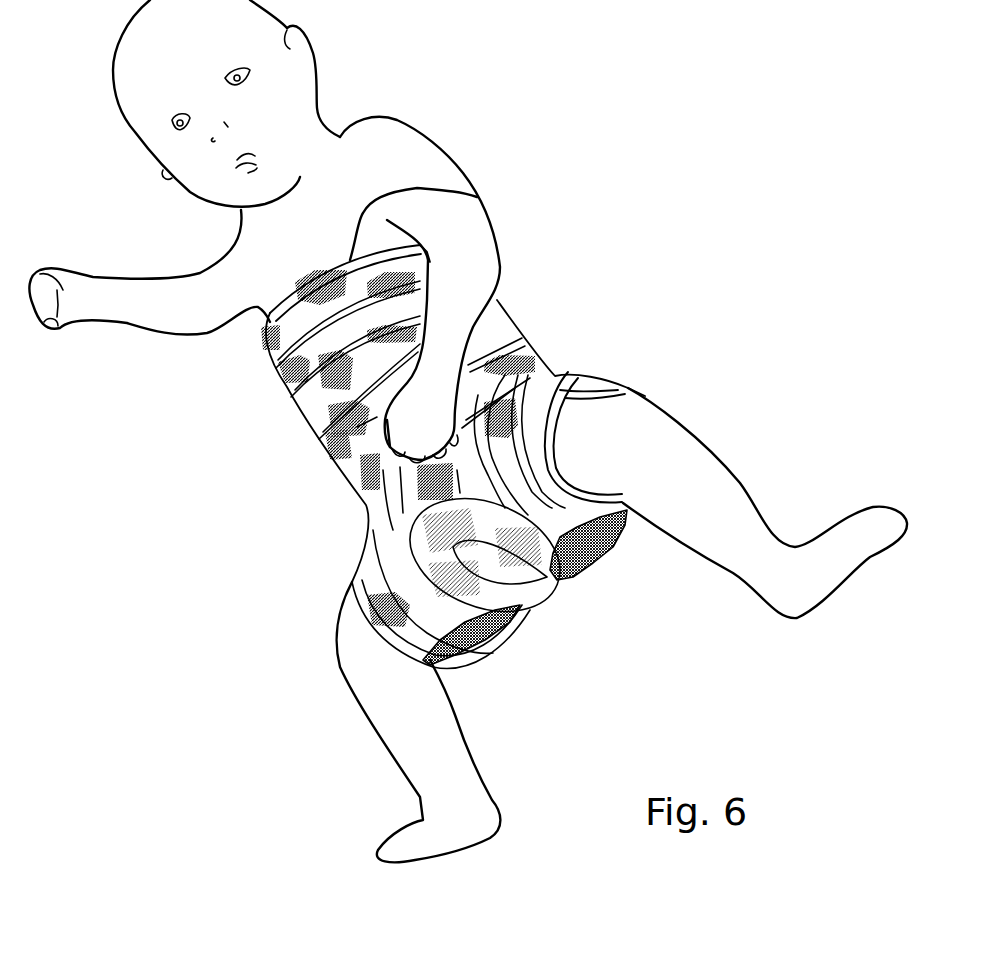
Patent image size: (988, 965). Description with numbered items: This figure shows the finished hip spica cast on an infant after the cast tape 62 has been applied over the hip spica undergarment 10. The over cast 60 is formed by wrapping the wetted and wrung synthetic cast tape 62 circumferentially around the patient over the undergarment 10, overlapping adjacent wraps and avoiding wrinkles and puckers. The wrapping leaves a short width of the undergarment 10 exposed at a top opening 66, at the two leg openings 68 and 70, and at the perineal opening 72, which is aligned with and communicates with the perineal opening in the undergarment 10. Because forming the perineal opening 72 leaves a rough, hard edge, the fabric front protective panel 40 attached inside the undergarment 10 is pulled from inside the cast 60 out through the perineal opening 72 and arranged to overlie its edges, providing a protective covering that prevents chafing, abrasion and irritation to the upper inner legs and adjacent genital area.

The hip spica undergarment 10 is at (605, 397).
The front protective panel 40 is at (547, 580).
The over cast 60 is at (555, 285).
The cast tape 62 is at (315, 385).
The top opening 66 is at (448, 193).
The leg opening 68 is at (360, 623).
The leg opening 70 is at (560, 485).
The perineal opening 72 is at (530, 580).